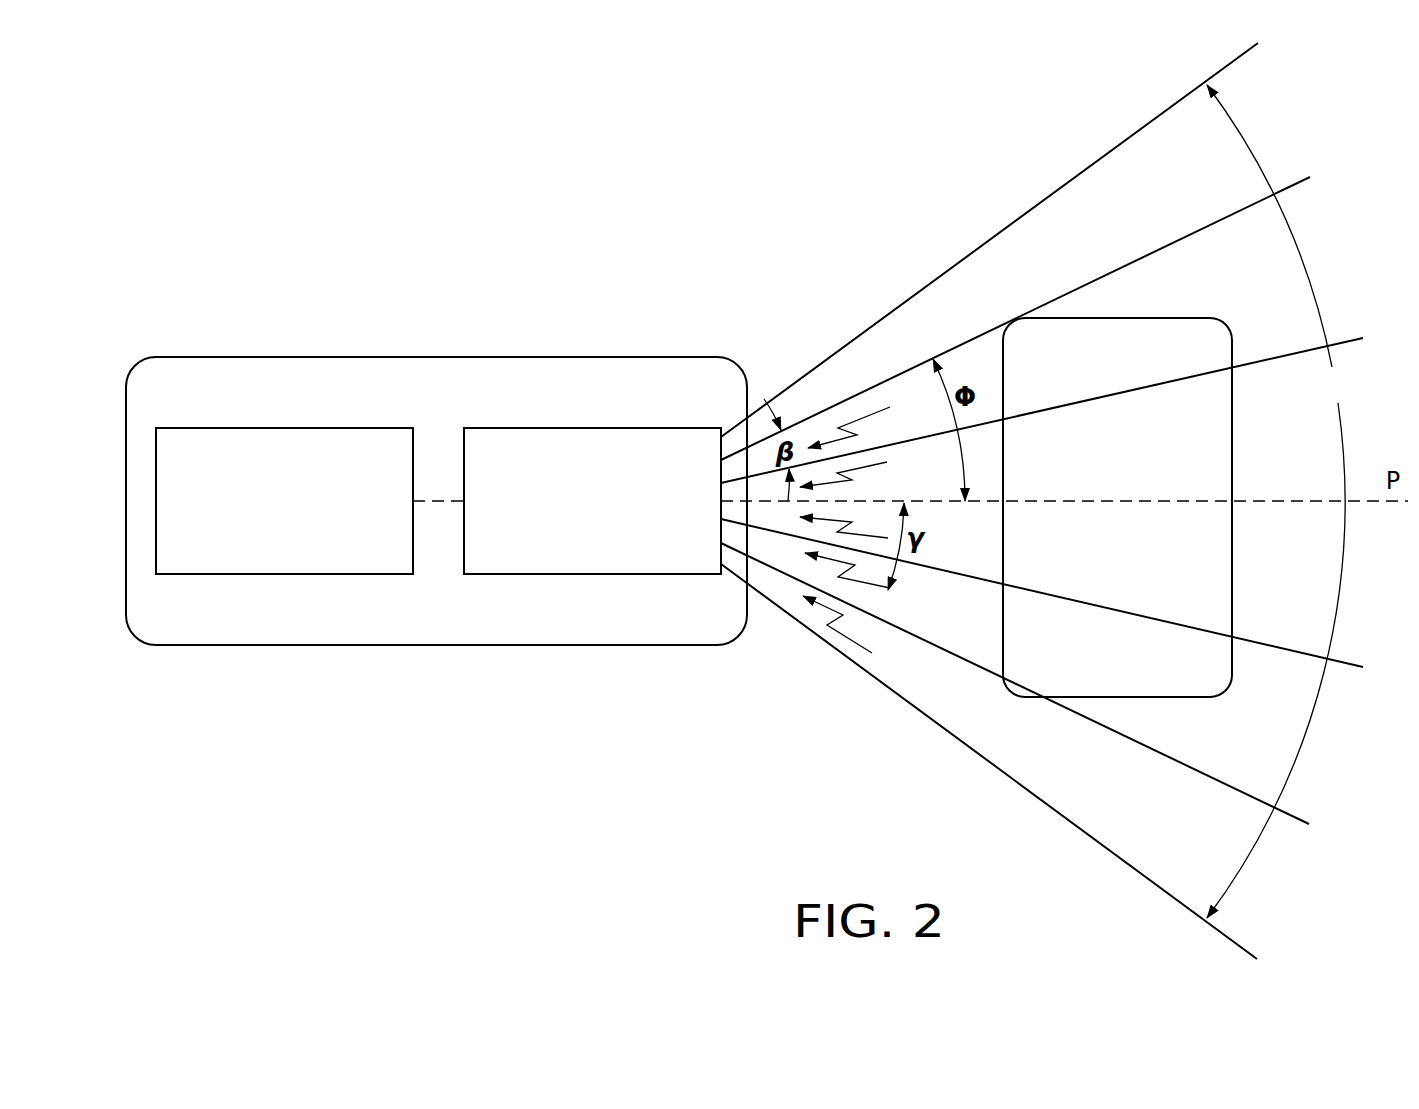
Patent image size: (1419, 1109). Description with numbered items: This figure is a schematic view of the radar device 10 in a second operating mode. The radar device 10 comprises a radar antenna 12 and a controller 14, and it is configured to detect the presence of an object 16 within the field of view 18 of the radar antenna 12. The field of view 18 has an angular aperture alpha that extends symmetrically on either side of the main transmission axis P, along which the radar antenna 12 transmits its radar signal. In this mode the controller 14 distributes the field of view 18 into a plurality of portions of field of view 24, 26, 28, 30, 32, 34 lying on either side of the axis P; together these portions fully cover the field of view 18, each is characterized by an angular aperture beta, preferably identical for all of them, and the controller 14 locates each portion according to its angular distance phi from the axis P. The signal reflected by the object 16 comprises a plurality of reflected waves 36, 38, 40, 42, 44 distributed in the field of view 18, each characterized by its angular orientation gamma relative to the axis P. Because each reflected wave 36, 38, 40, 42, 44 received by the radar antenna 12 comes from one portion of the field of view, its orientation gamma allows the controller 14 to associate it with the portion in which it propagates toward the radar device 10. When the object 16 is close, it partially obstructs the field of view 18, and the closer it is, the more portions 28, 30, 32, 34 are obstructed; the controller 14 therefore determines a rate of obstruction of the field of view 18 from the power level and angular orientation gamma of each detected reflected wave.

The radar device 10 is at (412, 338).
The radar antenna 12 is at (576, 515).
The controller 14 is at (268, 515).
The object 16 is at (1112, 485).
The field of view 18 is at (1035, 200).
The portion of field of view 24 is at (1184, 175).
The portion of field of view 26 is at (1249, 298).
The portion of field of view 28 is at (1272, 441).
The portion of field of view 30 is at (1274, 579).
The portion of field of view 32 is at (1241, 728).
The portion of field of view 34 is at (1177, 844).
The reflected wave 36 is at (858, 420).
The reflected wave 38 is at (883, 463).
The reflected wave 40 is at (875, 537).
The reflected wave 42 is at (879, 592).
The reflected wave 44 is at (847, 637).